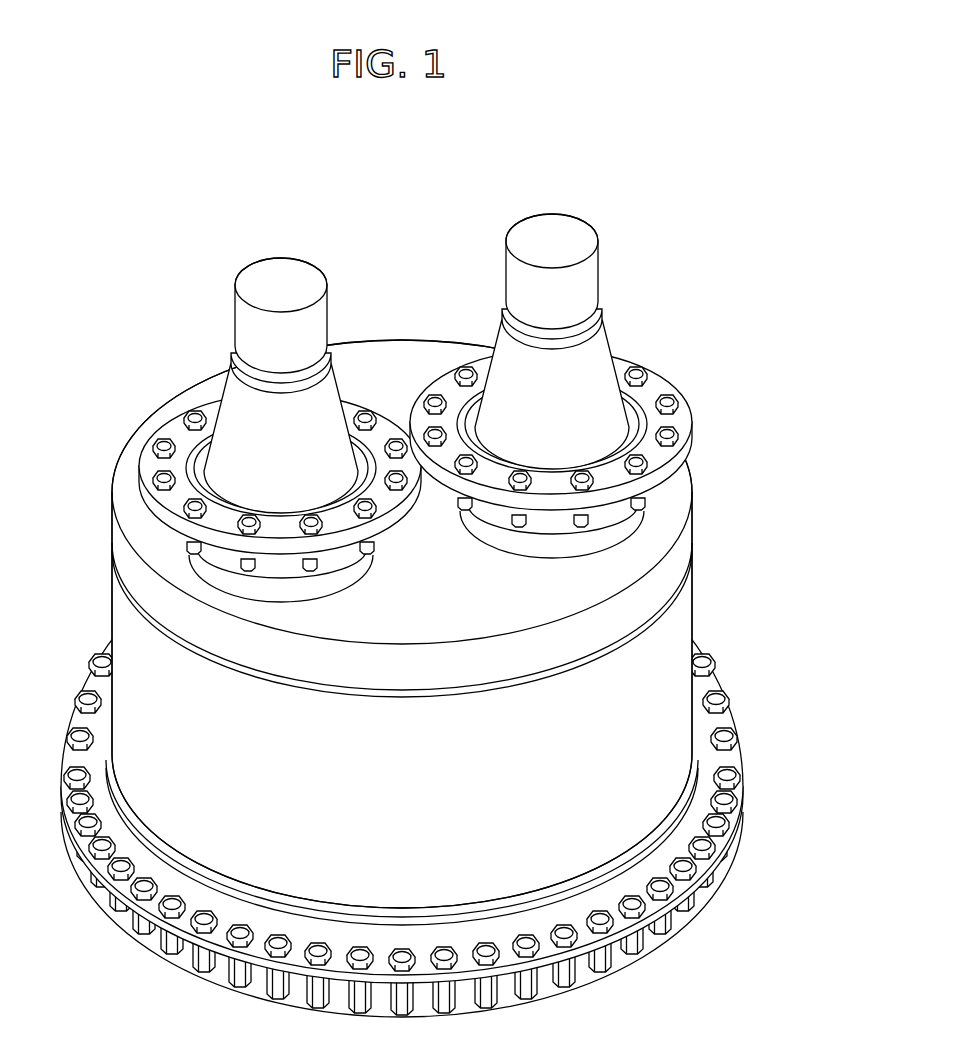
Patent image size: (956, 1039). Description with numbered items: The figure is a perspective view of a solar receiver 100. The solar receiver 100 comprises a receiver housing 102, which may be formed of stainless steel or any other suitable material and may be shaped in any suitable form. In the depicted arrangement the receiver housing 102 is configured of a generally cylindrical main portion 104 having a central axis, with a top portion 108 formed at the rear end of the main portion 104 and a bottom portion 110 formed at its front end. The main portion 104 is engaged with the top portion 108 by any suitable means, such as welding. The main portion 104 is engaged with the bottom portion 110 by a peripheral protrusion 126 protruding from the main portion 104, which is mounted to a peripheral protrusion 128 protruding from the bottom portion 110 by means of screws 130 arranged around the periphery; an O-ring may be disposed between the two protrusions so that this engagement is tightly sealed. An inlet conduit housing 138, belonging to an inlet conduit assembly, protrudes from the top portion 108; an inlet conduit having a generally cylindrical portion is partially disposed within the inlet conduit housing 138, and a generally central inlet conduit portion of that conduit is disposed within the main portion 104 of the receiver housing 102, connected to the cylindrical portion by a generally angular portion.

The solar receiver 100 is at (155, 118).
The receiver housing 102 is at (123, 647).
The main portion 104 is at (680, 647).
The top portion 108 is at (675, 517).
The bottom portion 110 is at (560, 988).
The peripheral protrusion 126 is at (728, 842).
The peripheral protrusion 128 is at (675, 920).
The screws 130 is at (707, 870).
The inlet conduit housing 138 is at (603, 352).